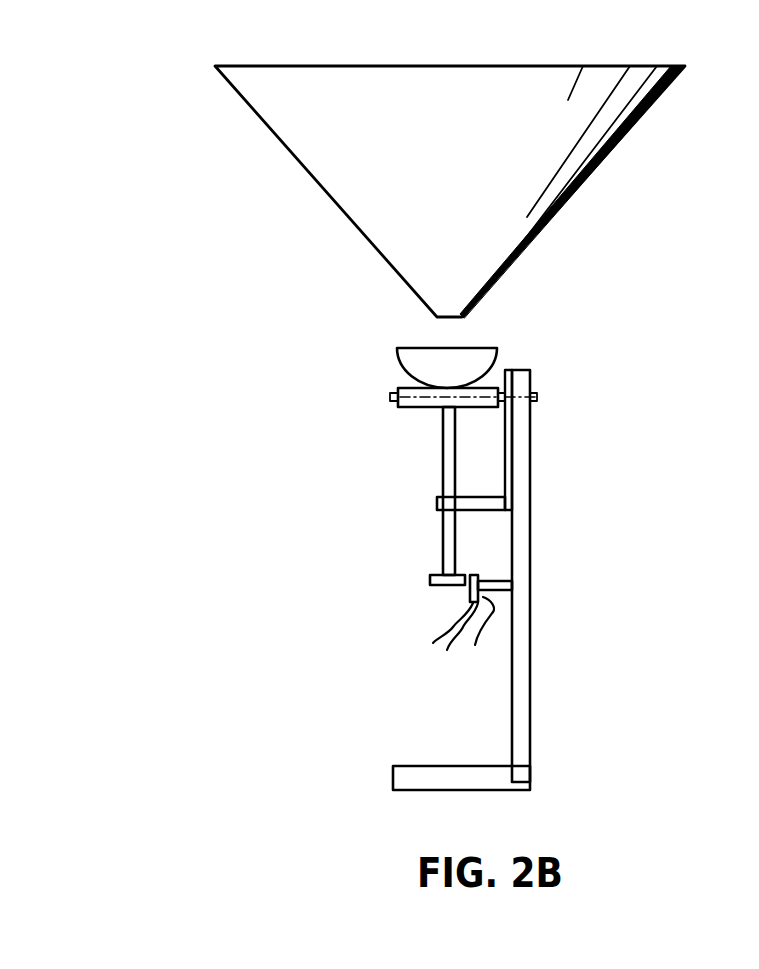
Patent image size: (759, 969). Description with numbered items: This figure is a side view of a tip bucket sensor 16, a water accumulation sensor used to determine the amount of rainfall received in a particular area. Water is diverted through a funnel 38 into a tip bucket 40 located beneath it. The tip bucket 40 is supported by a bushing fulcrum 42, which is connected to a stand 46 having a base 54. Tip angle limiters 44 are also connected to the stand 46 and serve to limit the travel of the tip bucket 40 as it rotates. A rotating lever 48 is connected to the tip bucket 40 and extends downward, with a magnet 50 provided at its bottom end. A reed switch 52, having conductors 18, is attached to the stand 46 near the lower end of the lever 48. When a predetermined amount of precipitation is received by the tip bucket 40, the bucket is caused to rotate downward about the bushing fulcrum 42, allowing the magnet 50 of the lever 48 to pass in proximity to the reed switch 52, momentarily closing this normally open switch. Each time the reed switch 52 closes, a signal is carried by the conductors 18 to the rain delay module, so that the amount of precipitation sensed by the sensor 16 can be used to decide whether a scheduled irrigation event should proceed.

The tip bucket 16 is at (590, 385).
The electrical conductor 18 is at (441, 622).
The funnel 38 is at (567, 202).
The tip bucket 40 is at (398, 361).
The bushing fulcrum 42 is at (397, 395).
The tip angle limiters 44 is at (437, 503).
The stand 46 is at (531, 693).
The rotating lever 48 is at (443, 542).
The magnet 50 is at (447, 590).
The reed switch 52 is at (485, 629).
The base 54 is at (437, 765).